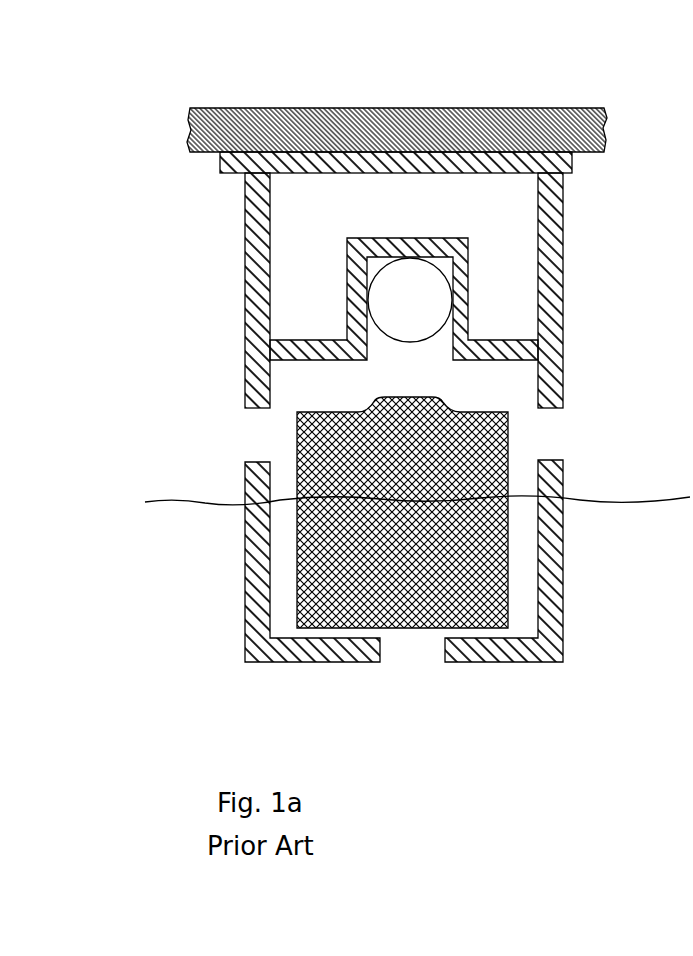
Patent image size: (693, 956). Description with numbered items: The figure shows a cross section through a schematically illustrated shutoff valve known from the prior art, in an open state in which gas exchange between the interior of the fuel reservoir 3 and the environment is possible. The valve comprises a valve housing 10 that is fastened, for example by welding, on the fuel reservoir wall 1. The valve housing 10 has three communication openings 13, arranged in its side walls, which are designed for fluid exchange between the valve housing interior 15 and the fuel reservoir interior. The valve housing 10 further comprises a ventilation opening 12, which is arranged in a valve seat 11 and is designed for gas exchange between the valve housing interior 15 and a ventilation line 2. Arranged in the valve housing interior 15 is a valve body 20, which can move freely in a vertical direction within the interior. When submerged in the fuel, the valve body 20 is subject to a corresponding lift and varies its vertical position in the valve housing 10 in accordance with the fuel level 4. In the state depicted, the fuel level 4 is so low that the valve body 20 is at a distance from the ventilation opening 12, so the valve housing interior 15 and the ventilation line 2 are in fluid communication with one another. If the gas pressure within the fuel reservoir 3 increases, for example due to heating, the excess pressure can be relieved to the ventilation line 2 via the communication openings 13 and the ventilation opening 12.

The fuel reservoir wall 1 is at (210, 138).
The ventilation line 2 is at (430, 297).
The fuel reservoir 3 is at (240, 100).
The fuel level 4 is at (212, 503).
The valve housing 10 is at (245, 245).
The valve seat 11 is at (320, 345).
The ventilation opening 12 is at (438, 352).
The communication opening 13 is at (257, 432).
The valve housing interior 15 is at (517, 540).
The valve body 20 is at (380, 550).